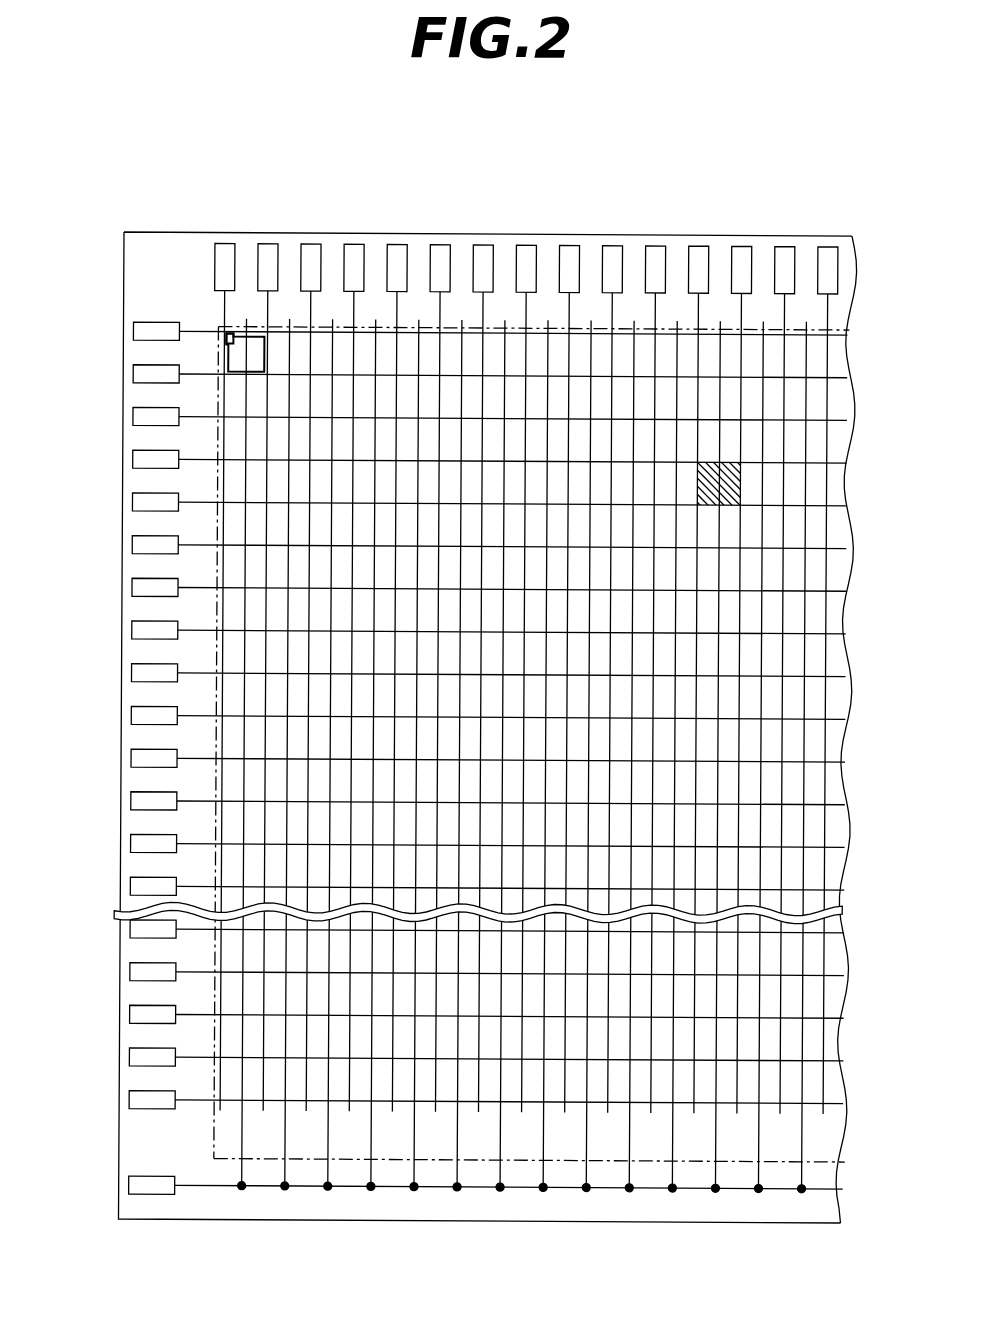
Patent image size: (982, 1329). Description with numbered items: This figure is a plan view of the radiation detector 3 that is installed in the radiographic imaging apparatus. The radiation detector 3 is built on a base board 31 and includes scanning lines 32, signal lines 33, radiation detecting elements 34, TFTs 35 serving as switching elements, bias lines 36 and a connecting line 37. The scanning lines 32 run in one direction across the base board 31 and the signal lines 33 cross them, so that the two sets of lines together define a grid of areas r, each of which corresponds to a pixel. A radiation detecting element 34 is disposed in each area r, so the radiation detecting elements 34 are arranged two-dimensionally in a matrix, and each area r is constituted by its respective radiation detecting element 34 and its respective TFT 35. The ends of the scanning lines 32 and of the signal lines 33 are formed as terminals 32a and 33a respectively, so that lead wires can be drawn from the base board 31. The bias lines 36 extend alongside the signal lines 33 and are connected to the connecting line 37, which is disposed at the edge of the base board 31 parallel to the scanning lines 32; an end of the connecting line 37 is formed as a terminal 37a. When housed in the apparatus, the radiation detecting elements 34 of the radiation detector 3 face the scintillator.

The radiation detector 3 is at (466, 188).
The base board 31 is at (170, 252).
The scanning lines 32 is at (205, 630).
The terminals 32a is at (148, 673).
The signal lines 33 is at (522, 318).
The terminals 33a is at (353, 255).
The radiation detecting elements 34 is at (235, 362).
The TFTs 35 is at (226, 335).
The bias lines 36 is at (377, 1134).
The connecting line 37 is at (608, 1188).
The terminal 37a is at (140, 1187).
The areas r is at (731, 492).